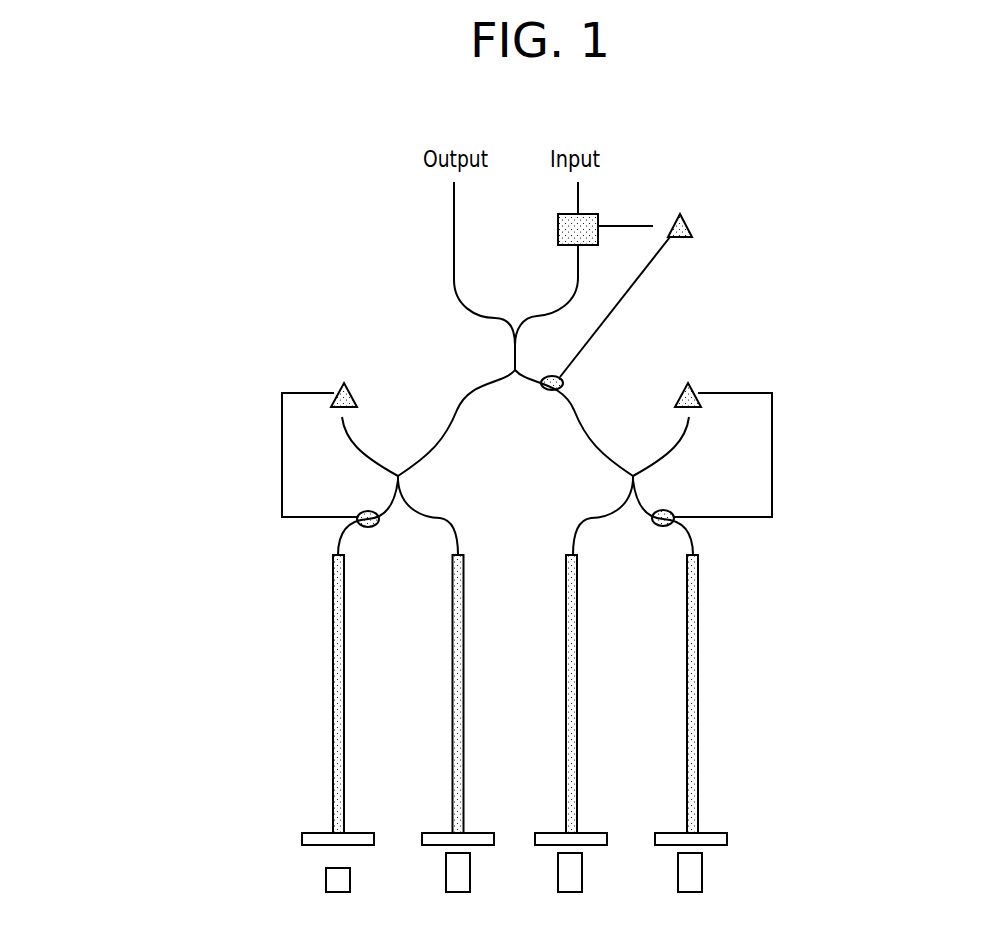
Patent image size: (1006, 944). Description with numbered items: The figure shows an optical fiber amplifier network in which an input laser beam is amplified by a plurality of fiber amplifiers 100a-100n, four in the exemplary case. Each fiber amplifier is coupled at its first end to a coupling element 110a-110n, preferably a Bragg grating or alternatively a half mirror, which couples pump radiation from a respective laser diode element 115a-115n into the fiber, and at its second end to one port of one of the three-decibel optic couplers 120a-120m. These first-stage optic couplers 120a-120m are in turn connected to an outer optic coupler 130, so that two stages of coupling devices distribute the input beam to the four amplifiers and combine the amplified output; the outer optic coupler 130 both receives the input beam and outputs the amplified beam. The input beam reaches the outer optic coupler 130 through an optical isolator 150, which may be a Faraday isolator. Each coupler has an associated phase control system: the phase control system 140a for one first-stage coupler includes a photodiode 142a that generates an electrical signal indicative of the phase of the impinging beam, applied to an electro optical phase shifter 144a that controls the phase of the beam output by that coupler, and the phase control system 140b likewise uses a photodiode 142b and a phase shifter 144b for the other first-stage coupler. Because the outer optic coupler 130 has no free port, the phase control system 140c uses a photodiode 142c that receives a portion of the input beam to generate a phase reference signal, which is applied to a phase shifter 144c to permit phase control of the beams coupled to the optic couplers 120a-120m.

The fiber amplifiers 100a-100n is at (728, 713).
The coupling elements 110a-110n is at (757, 828).
The laser diode elements 115a-115n is at (736, 870).
The 3-dB optic couplers 120a-120m is at (617, 483).
The outer optic coupler 130 is at (473, 332).
The phase control system 140a is at (213, 455).
The phase control system 140b is at (833, 455).
The phase control system 140c is at (693, 307).
The photodiode 142a is at (317, 378).
The photodiode 142b is at (719, 380).
The photodiode 142c is at (757, 241).
The electro optical phase shifter 144a is at (325, 533).
The phase shifter 144b is at (713, 533).
The phase shifter 144c is at (510, 373).
The optical isolator 150 is at (633, 204).